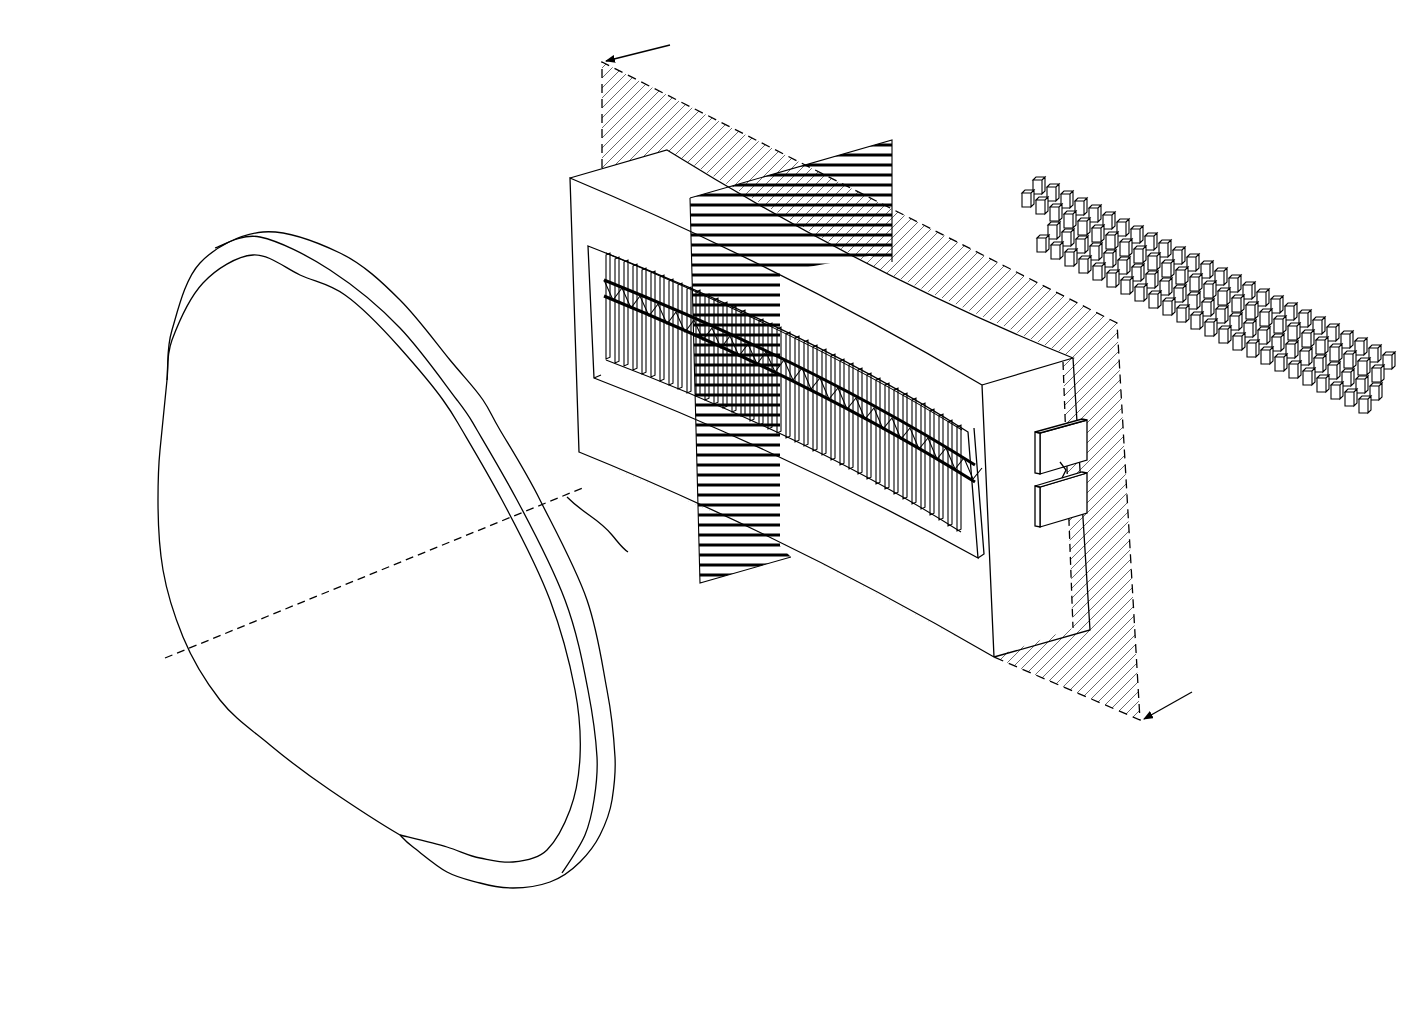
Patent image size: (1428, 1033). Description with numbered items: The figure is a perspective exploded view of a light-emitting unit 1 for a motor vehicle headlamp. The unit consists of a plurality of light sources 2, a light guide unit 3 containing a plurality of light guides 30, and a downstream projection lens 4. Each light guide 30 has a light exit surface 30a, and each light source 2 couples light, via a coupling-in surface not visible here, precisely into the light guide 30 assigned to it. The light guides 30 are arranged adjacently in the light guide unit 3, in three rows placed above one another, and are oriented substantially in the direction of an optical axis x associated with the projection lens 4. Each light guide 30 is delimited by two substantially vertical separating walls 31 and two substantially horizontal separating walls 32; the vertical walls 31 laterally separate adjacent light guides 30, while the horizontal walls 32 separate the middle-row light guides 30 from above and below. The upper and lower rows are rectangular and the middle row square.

The light-emitting unit 1 is at (228, 82).
The light sources 2 is at (1098, 212).
The light guide unit 3 is at (518, 147).
The projection lens 4 is at (543, 722).
The light guides 30 is at (625, 345).
The light exit surface 30a is at (610, 274).
The vertical separating walls 31 is at (880, 372).
The horizontal separating walls 32 is at (658, 276).